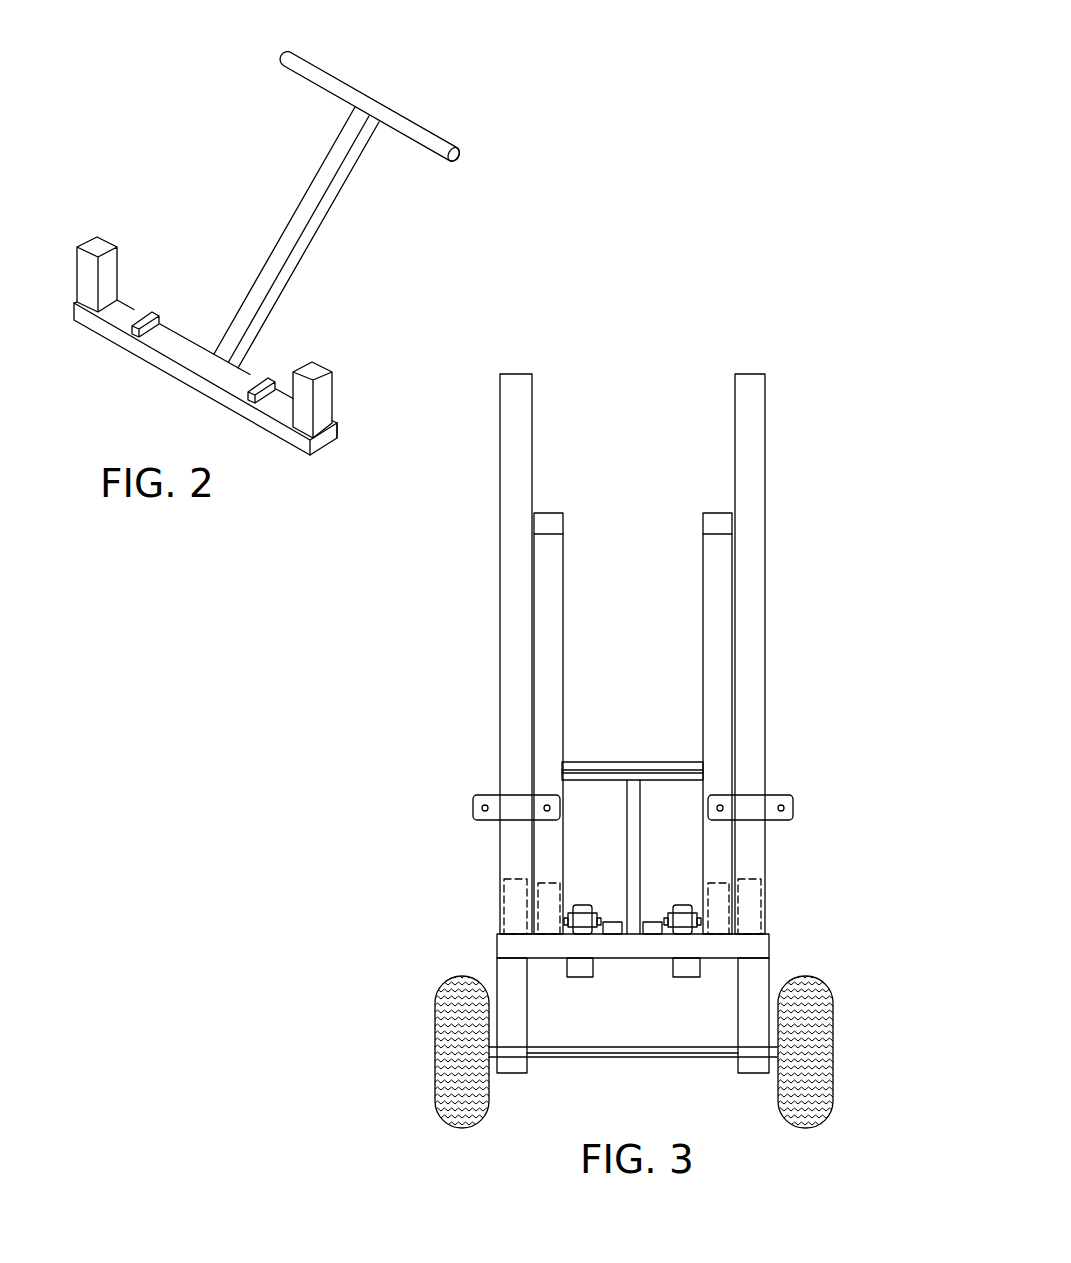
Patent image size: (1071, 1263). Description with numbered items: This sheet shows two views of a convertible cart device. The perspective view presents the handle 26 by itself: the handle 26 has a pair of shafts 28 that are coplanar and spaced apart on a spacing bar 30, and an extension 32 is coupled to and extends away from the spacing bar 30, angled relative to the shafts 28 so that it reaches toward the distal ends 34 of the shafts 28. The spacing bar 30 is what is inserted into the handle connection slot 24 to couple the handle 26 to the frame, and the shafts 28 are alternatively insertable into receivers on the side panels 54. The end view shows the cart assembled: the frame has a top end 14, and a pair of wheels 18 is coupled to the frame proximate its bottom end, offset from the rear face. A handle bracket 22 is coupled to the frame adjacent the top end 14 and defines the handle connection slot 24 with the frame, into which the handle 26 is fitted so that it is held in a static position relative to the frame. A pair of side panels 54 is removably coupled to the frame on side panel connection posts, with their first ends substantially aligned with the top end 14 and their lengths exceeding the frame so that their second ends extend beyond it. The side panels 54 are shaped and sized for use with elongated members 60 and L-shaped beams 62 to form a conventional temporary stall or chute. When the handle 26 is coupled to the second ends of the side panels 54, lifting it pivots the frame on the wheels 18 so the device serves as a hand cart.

In FIG. 3, the top end 14 is at (710, 947).
In FIG. 3, the wheels 18 is at (802, 978).
In FIG. 3, the handle bracket 22 is at (682, 978).
In FIG. 3, the handle connection slot 24 is at (543, 969).
In FIG. 2, the handle 26 is at (157, 78).
In FIG. 3, the handle 26 is at (633, 778).
In FIG. 2, the shafts 28 is at (115, 277).
In FIG. 2, the spacing bar 30 is at (128, 327).
In FIG. 2, the extension 32 is at (318, 193).
In FIG. 2, the distal ends 34 is at (97, 245).
In FIG. 3, the side panels 54 is at (515, 387).
In FIG. 3, the elongated members 60 is at (582, 903).
In FIG. 3, the L-shaped beams 62 is at (715, 522).